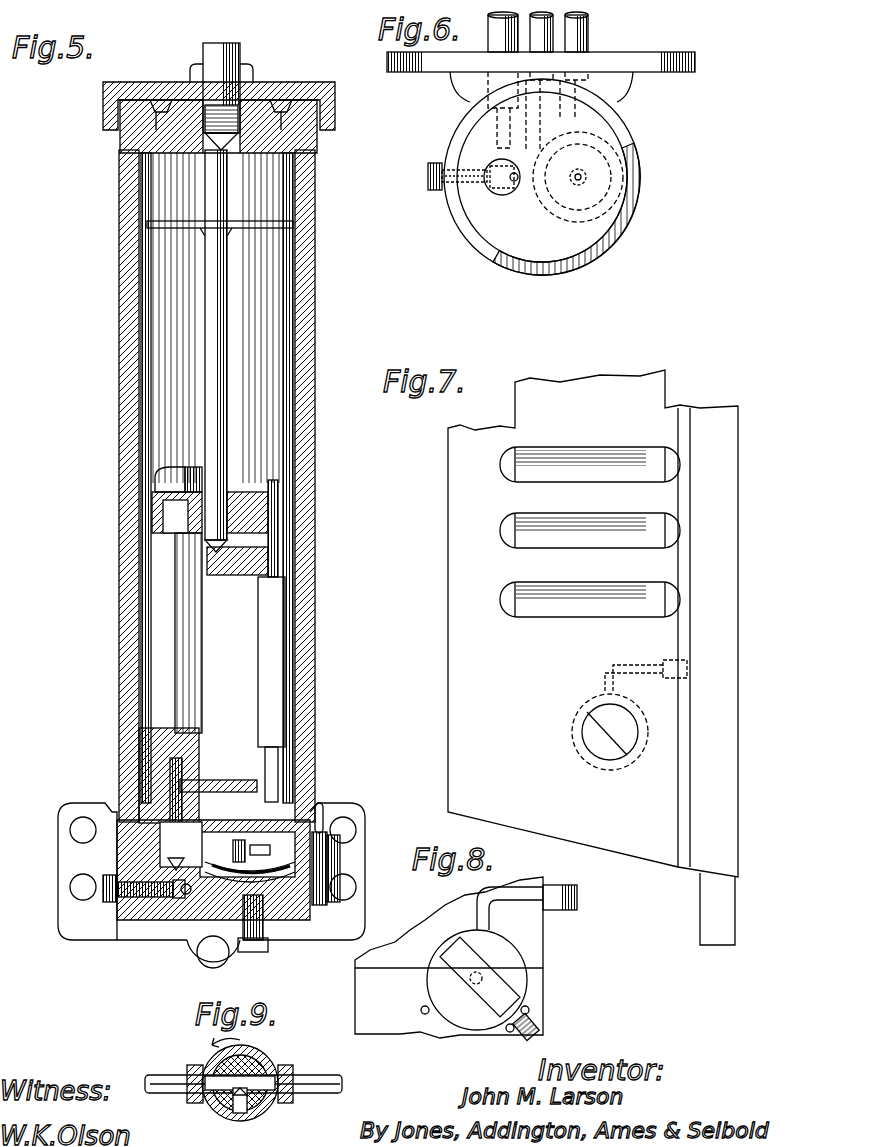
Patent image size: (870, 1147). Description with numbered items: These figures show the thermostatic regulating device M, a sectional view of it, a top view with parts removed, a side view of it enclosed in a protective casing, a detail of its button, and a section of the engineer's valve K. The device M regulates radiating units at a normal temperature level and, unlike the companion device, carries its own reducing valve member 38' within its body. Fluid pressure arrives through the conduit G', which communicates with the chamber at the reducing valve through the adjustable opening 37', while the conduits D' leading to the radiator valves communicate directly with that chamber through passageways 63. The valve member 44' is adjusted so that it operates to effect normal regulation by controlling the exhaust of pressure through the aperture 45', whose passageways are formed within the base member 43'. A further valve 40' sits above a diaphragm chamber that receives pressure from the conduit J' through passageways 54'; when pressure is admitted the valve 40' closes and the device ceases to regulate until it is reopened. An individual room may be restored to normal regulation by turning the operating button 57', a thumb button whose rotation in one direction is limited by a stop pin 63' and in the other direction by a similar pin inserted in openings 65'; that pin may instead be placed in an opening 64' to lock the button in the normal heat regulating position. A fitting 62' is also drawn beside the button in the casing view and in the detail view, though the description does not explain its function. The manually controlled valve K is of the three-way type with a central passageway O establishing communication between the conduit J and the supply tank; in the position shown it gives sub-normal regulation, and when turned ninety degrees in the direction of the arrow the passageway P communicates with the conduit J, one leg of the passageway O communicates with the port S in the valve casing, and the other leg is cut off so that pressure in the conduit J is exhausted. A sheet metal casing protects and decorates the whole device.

In FIG. 5, the thermostatic regulating device M is at (305, 498).
In FIG. 5, the valve member 44' is at (304, 689).
In FIG. 5, the aperture 45' is at (218, 766).
In FIG. 5, the valve 40' is at (340, 805).
In FIG. 5, the operating button 57' is at (365, 866).
In FIG. 7, the operating button 57' is at (614, 735).
In FIG. 8, the operating button 57' is at (506, 980).
In FIG. 5, the reducing valve member 38' is at (115, 924).
In FIG. 6, the reducing valve member 38' is at (436, 180).
In FIG. 5, the adjustable opening 37' is at (149, 924).
In FIG. 6, the adjustable opening 37' is at (469, 165).
In FIG. 5, the passageway 63 is at (169, 928).
In FIG. 6, the stop pin 63' is at (537, 144).
In FIG. 8, the stop pin 63' is at (554, 1013).
In FIG. 5, the passageway 54' is at (216, 946).
In FIG. 6, the passageway 54' is at (600, 164).
In FIG. 6, the conduit G' is at (487, 32).
In FIG. 6, the conduit D' is at (533, 26).
In FIG. 6, the conduit J' is at (593, 32).
In FIG. 7, the opening 64' is at (571, 623).
In FIG. 8, the opening 64' is at (515, 1047).
In FIG. 7, the fitting 62' is at (646, 662).
In FIG. 8, the fitting 62' is at (546, 907).
In FIG. 7, the base member 43' is at (693, 909).
In FIG. 8, the openings 65' is at (427, 1043).
In FIG. 9, the conduit J is at (243, 1067).
In FIG. 9, the central passageway O is at (270, 1065).
In FIG. 9, the port S is at (248, 1050).
In FIG. 9, the three-way valve K is at (222, 1113).
In FIG. 9, the passageway P is at (255, 1118).